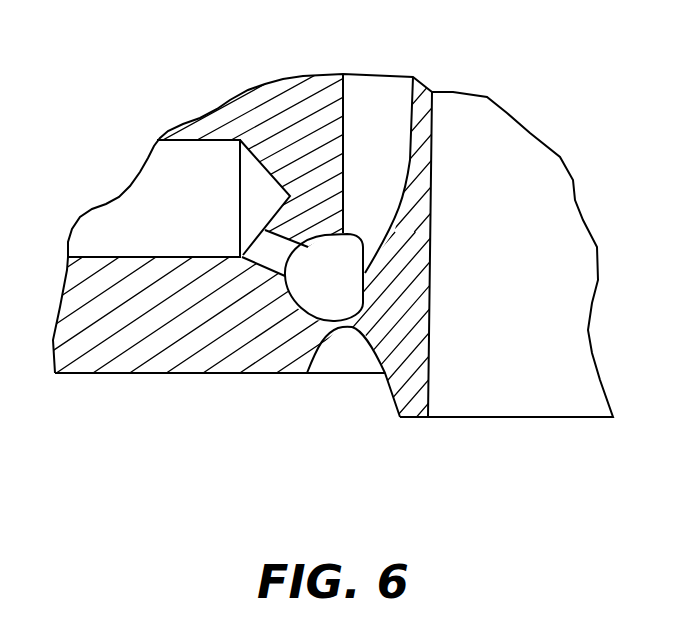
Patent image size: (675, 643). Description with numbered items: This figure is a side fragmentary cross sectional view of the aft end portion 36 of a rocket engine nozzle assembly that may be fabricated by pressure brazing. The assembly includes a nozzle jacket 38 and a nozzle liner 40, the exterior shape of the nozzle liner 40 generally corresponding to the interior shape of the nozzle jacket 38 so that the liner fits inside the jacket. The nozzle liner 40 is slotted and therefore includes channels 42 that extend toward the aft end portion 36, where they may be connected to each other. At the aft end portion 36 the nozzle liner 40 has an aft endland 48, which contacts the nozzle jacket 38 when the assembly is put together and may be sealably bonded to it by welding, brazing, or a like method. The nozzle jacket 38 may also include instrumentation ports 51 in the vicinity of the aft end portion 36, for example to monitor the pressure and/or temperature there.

The aft end portion 36 is at (232, 420).
The nozzle jacket 38 is at (100, 358).
The nozzle liner 40 is at (427, 254).
The channels 42 is at (379, 97).
The aft endland 48 is at (343, 322).
The instrumentation ports 51 is at (152, 180).